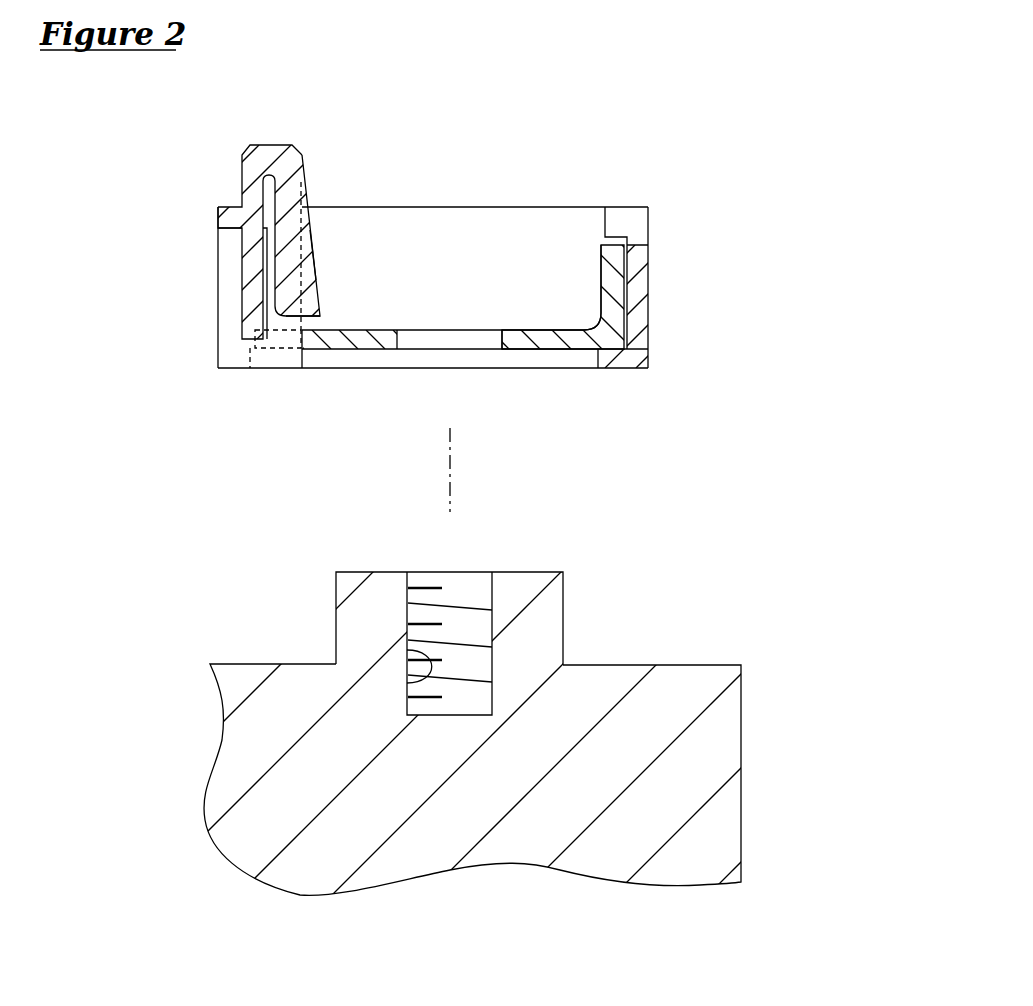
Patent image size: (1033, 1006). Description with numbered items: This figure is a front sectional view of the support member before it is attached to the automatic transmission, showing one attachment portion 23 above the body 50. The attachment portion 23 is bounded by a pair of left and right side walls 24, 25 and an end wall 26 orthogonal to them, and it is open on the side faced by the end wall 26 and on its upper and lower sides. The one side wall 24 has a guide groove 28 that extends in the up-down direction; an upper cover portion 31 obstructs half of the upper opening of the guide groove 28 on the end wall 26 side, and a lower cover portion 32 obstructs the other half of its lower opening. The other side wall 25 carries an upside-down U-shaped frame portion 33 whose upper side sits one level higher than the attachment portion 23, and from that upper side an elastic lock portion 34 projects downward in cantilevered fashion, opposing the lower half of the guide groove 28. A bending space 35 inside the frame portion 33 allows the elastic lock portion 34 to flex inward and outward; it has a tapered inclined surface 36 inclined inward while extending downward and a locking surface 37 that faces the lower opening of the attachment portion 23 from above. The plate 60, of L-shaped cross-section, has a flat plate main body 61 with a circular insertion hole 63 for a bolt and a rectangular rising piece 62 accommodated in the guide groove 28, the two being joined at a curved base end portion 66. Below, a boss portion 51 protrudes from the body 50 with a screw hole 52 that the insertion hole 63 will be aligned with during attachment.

The attachment portion 23 is at (692, 293).
The side wall 24 is at (648, 258).
The side wall 25 is at (247, 273).
The end wall 26 is at (463, 212).
The guide groove 28 is at (614, 313).
The upper cover portion 31 is at (605, 223).
The lower cover portion 32 is at (610, 358).
The frame portion 33 is at (262, 153).
The elastic lock portion 34 is at (307, 235).
The bending space 35 is at (267, 285).
The inclined surface 36 is at (312, 273).
The locking surface 37 is at (316, 317).
The body 50 is at (741, 749).
The boss portion 51 is at (343, 585).
The screw hole 52 is at (407, 680).
The plate 60 is at (527, 330).
The plate main body 61 is at (556, 342).
The rising piece 62 is at (603, 278).
The insertion hole 63 is at (502, 338).
The base end portion 66 is at (612, 352).